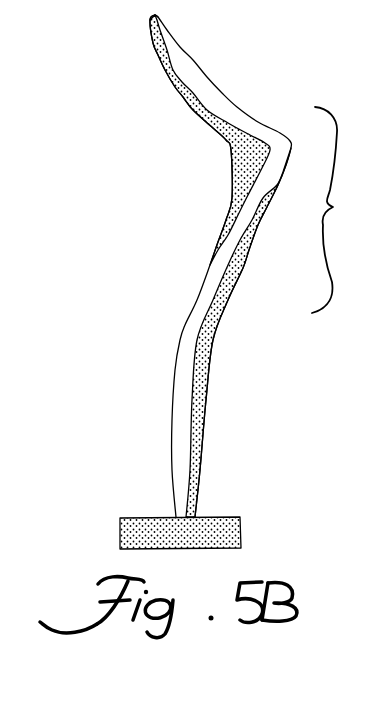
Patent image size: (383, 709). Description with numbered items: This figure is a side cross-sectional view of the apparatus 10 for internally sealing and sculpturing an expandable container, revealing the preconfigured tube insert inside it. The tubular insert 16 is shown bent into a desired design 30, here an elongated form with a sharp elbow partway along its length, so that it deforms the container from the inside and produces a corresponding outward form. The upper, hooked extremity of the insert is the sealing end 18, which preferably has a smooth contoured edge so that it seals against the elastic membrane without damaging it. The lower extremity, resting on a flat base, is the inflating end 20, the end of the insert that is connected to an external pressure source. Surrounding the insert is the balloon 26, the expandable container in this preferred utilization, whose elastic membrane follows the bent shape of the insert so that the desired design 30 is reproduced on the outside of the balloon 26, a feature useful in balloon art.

The apparatus 10 is at (172, 266).
The tubular insert 16 is at (215, 269).
The sealing end 18 is at (158, 20).
The inflating end 20 is at (187, 516).
The balloon 26 is at (231, 197).
The desired design 30 is at (340, 210).